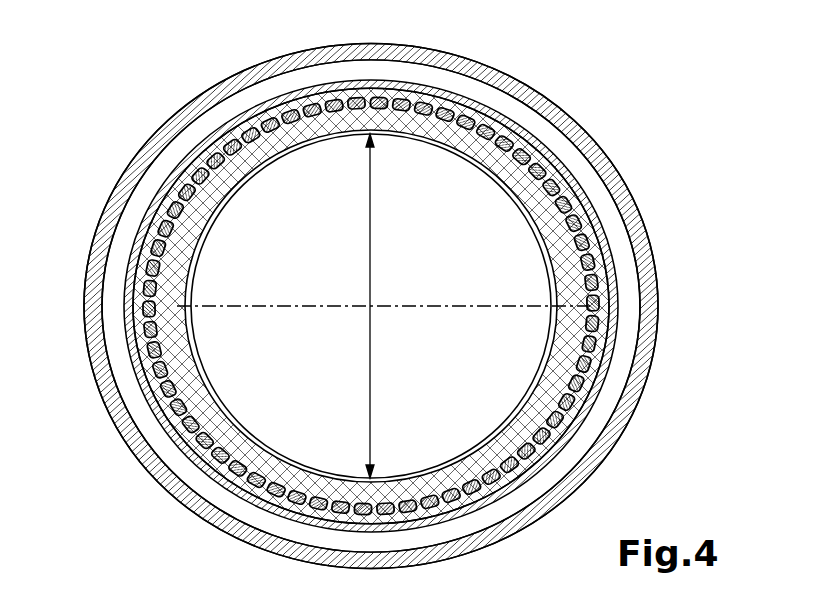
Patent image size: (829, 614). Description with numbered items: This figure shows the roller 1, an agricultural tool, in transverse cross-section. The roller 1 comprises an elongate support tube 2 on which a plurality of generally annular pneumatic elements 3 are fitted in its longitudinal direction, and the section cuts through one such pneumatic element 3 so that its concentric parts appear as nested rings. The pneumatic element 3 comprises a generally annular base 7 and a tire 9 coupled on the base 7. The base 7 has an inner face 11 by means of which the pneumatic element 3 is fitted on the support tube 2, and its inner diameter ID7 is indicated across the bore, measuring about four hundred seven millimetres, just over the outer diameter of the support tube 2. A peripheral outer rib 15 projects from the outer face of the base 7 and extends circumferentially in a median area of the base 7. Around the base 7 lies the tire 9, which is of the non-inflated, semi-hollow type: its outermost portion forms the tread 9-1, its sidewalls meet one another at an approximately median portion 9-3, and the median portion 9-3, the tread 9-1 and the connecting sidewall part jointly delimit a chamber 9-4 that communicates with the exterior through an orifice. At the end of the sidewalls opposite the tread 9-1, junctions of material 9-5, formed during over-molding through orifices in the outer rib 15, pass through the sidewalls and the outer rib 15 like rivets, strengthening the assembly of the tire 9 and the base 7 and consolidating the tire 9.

The roller 1 is at (400, 284).
The support tube 2 is at (428, 146).
The pneumatic element 3 is at (378, 304).
The base 7 is at (420, 262).
The tire 9 is at (364, 284).
The tread 9-1 is at (512, 80).
The median portion 9-3 is at (450, 92).
The chamber 9-4 is at (222, 113).
The junction of material 9-5 is at (570, 447).
The inner face 11 is at (371, 306).
The outer rib 15 is at (307, 100).
The inner diameter of the base ID7 is at (372, 350).